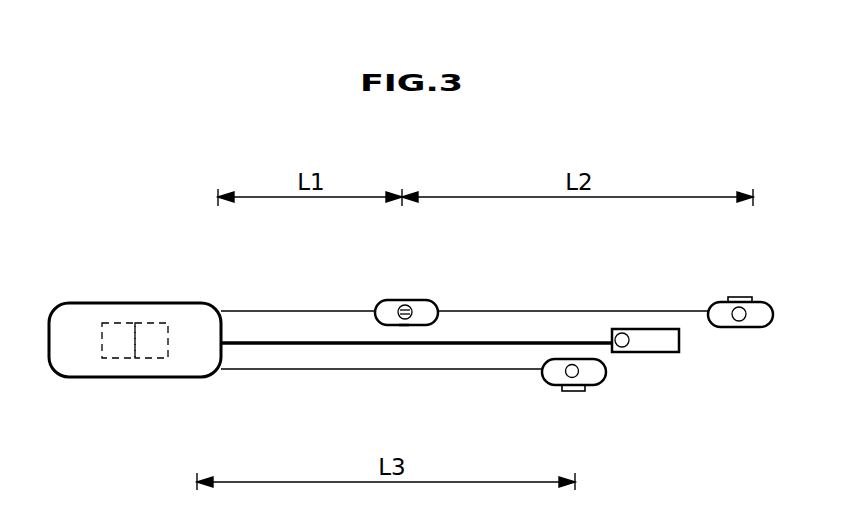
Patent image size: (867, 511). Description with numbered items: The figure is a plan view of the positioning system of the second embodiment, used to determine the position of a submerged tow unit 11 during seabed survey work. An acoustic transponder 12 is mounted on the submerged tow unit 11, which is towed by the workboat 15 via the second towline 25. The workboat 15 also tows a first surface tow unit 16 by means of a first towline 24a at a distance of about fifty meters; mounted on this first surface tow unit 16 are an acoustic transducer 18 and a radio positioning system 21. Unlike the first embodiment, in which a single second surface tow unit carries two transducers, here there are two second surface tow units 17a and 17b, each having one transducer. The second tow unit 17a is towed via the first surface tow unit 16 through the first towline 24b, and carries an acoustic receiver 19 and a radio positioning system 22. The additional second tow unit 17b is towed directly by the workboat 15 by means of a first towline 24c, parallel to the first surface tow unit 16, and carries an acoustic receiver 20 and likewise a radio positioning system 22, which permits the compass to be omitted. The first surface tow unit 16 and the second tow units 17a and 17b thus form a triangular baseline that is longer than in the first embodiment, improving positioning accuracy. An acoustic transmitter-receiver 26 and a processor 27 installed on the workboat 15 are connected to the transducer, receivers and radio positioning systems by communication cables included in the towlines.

The submerged tow unit 11 is at (668, 352).
The acoustic transponder 12 is at (622, 352).
The workboat 15 is at (130, 303).
The first surface tow unit 16 is at (378, 303).
The second surface tow unit 17a is at (712, 305).
The additional second surface tow unit 17b is at (545, 378).
The acoustic transducer 18 is at (403, 326).
The acoustic receiver 19 is at (740, 297).
The acoustic receiver 20 is at (585, 391).
The radio positioning system 21 is at (405, 305).
The radio positioning system 22 is at (740, 330).
The first towline 24a is at (258, 310).
The first towline 24b is at (562, 310).
The first towline 24c is at (255, 370).
The second towline 25 is at (320, 345).
The acoustic transmitter-receiver 26 is at (110, 358).
The processor 27 is at (158, 358).